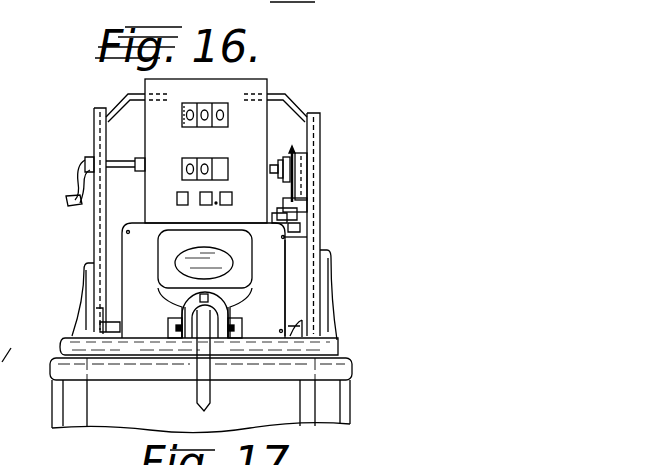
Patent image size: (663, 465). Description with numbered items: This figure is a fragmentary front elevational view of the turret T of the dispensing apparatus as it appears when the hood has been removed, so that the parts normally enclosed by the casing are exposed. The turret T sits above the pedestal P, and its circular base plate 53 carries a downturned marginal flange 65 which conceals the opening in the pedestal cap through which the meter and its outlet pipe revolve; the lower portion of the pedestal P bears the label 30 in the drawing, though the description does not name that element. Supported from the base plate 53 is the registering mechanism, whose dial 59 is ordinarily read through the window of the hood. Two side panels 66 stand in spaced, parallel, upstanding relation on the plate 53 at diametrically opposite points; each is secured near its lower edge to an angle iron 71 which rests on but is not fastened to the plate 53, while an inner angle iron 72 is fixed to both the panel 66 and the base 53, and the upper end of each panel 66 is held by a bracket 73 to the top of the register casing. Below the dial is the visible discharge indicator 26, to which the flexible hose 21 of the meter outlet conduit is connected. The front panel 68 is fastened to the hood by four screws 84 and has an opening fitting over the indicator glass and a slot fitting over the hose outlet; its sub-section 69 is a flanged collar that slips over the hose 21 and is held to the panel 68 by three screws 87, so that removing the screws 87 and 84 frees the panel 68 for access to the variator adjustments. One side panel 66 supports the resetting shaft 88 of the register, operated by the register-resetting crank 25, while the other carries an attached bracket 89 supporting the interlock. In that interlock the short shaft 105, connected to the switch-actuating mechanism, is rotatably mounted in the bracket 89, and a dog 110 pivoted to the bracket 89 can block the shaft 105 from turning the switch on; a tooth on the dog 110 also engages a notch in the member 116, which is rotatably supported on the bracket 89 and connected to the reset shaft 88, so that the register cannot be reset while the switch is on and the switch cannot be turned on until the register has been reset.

The flexible hose 21 is at (206, 410).
The register-resetting crank 25 is at (67, 203).
The visible discharge indicator 26 is at (185, 262).
The base 30 is at (201, 395).
The circular base plate 53 is at (302, 321).
The dial 59 is at (262, 121).
The downturned marginal flange 65 is at (337, 354).
The side panels 66 is at (94, 127).
The front panel 68 is at (275, 262).
The sub-section 69 is at (212, 311).
The angle iron 71 is at (87, 273).
The inner angle iron 72 is at (101, 315).
The bracket 73 is at (130, 93).
The screws 84 is at (117, 330).
The screws 87 is at (179, 328).
The resetting shaft 88 is at (118, 169).
The bracket 89 is at (302, 184).
The short shaft 105 is at (318, 218).
The dog 110 is at (288, 208).
The member 116 is at (298, 166).
The turret T is at (332, 215).
The pedestal P is at (362, 412).